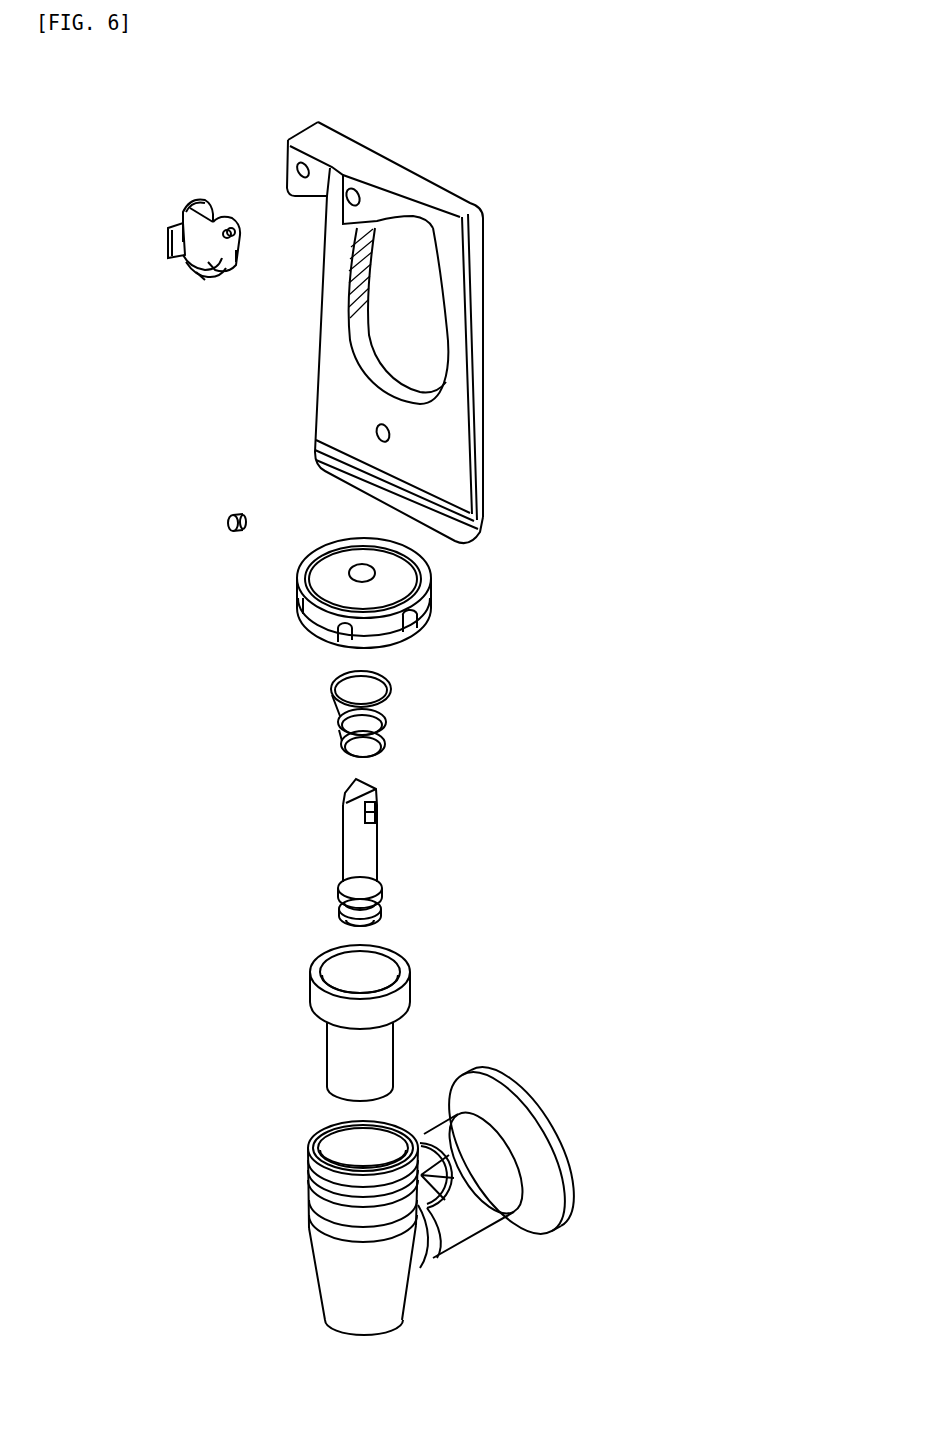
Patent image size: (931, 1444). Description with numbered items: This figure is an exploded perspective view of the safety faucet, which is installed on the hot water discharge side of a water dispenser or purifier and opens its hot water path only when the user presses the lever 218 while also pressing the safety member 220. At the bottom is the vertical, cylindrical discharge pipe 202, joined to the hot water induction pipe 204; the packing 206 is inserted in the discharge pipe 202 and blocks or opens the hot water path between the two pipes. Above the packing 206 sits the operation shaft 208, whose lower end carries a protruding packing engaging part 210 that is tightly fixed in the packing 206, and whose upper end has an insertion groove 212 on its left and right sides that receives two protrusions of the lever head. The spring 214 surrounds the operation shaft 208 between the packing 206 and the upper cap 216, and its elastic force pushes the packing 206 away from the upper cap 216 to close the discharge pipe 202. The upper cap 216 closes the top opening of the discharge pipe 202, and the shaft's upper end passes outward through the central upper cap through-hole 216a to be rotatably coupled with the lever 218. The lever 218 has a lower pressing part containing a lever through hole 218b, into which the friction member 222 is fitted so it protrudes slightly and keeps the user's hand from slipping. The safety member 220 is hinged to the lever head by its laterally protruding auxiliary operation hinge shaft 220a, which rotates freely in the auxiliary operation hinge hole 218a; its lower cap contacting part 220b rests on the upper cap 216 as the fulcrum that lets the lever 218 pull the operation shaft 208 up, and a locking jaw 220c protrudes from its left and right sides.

The discharge pipe 202 is at (323, 1266).
The hot water induction pipe 204 is at (510, 1160).
The packing 206 is at (326, 1053).
The operation shaft 208 is at (336, 842).
The packing engaging part 210 is at (385, 889).
The insertion groove 212 is at (378, 803).
The spring 214 is at (340, 727).
The upper cap 216 is at (308, 618).
The upper cap through-hole 216a is at (366, 573).
The lever 218 is at (480, 393).
The auxiliary operation hinge hole 218a is at (363, 160).
The lever through hole 218b is at (372, 432).
The safety member 220 is at (168, 246).
The auxiliary operation hinge shaft 220a is at (222, 212).
The cap contacting part 220b is at (235, 275).
The locking jaw 220c is at (203, 280).
The friction member 222 is at (226, 520).